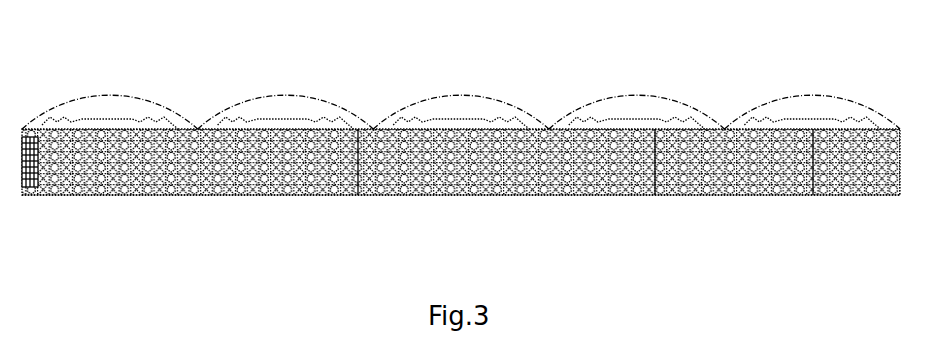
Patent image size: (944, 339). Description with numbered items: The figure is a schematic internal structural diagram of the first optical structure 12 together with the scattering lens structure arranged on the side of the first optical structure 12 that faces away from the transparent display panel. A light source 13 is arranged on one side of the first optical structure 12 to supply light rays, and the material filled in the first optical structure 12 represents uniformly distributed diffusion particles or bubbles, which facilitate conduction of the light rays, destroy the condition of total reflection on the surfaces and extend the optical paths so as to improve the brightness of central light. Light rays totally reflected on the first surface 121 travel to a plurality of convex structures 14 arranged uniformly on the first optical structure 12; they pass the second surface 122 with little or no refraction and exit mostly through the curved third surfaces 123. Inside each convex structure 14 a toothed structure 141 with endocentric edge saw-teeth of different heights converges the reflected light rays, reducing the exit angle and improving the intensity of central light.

The first optical structure 12 is at (582, 197).
The first surface 121 is at (775, 196).
The second surface 122 is at (775, 110).
The third surface 123 is at (477, 98).
The light source 13 is at (38, 187).
The convex structure 14 is at (662, 98).
The toothed structure 141 is at (283, 110).